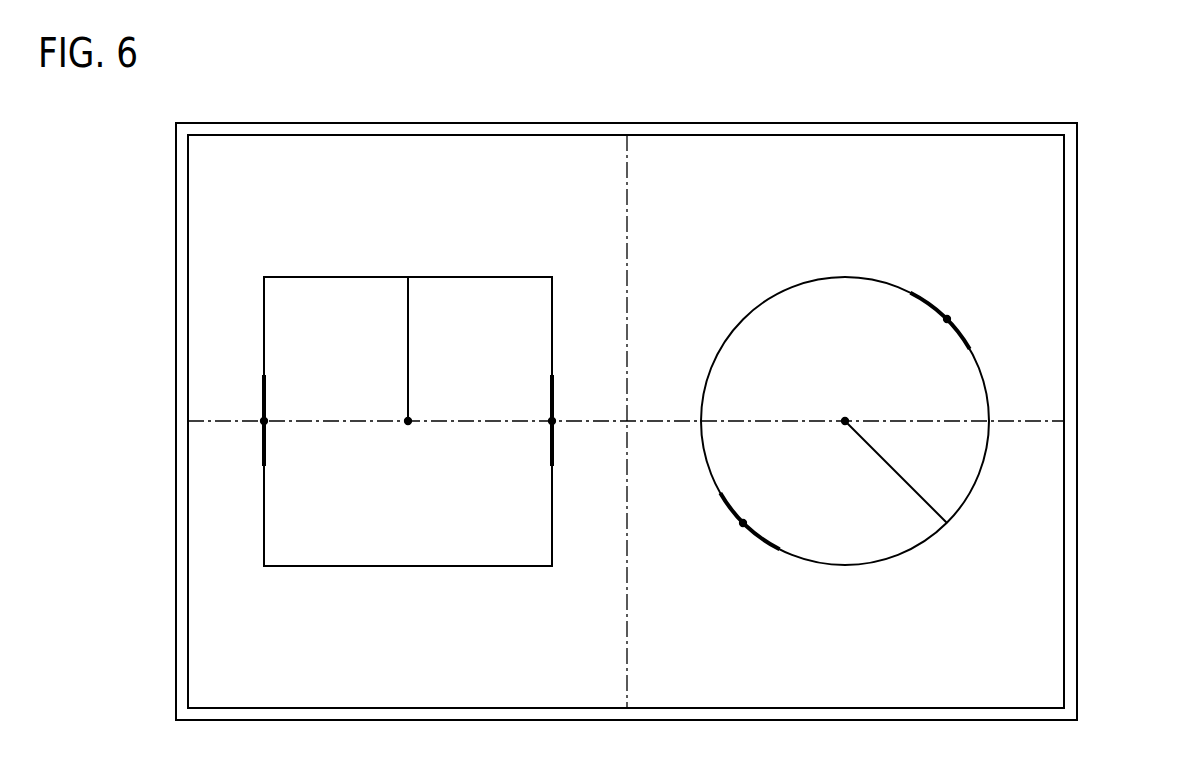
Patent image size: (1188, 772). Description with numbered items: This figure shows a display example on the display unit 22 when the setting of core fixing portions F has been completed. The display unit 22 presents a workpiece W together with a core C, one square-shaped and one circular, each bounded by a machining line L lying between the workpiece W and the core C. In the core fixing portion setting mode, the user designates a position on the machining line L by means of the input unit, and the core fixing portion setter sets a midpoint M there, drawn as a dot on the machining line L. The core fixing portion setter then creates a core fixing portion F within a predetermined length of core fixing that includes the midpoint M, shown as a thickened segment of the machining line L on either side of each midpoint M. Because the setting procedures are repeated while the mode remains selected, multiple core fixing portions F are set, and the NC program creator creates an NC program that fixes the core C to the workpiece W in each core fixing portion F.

The display unit 22 is at (1078, 255).
The workpiece W is at (1033, 517).
The core C is at (303, 318).
The machining line L is at (447, 277).
The midpoint M is at (261, 418).
The core fixing portion F is at (262, 441).